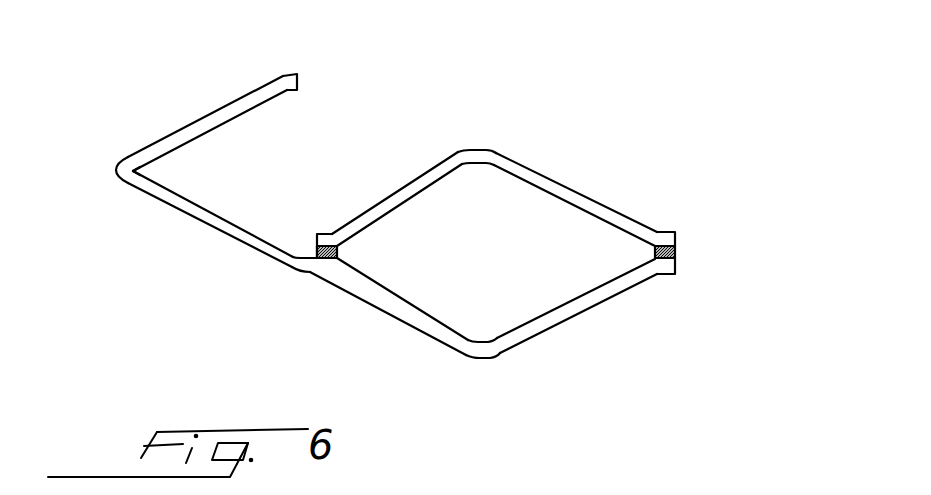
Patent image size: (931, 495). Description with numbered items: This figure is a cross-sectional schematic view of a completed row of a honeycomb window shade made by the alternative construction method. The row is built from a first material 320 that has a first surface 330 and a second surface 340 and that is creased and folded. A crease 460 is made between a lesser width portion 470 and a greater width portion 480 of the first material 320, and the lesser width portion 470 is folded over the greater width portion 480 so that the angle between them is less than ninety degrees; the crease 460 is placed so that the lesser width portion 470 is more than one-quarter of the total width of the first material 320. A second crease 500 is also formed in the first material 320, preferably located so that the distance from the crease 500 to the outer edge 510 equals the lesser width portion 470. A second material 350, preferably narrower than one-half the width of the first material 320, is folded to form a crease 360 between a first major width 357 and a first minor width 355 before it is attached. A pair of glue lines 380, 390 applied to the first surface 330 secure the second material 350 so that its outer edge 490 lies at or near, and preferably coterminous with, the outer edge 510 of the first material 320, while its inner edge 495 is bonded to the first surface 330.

The first material 320 is at (308, 273).
The first surface 330 is at (405, 292).
The second surface 340 is at (597, 311).
The second material 350 is at (556, 180).
The first minor width 355 is at (407, 185).
The first major width 357 is at (611, 216).
The crease 360 is at (478, 150).
The glue line 380 is at (310, 241).
The glue line 390 is at (677, 252).
The crease 460 is at (129, 182).
The lesser width portion 470 is at (180, 128).
The greater width portion 480 is at (194, 211).
The outer edge 490 is at (681, 235).
The inner edge 495 is at (314, 254).
The second crease 500 is at (490, 350).
The outer edge 510 is at (689, 270).